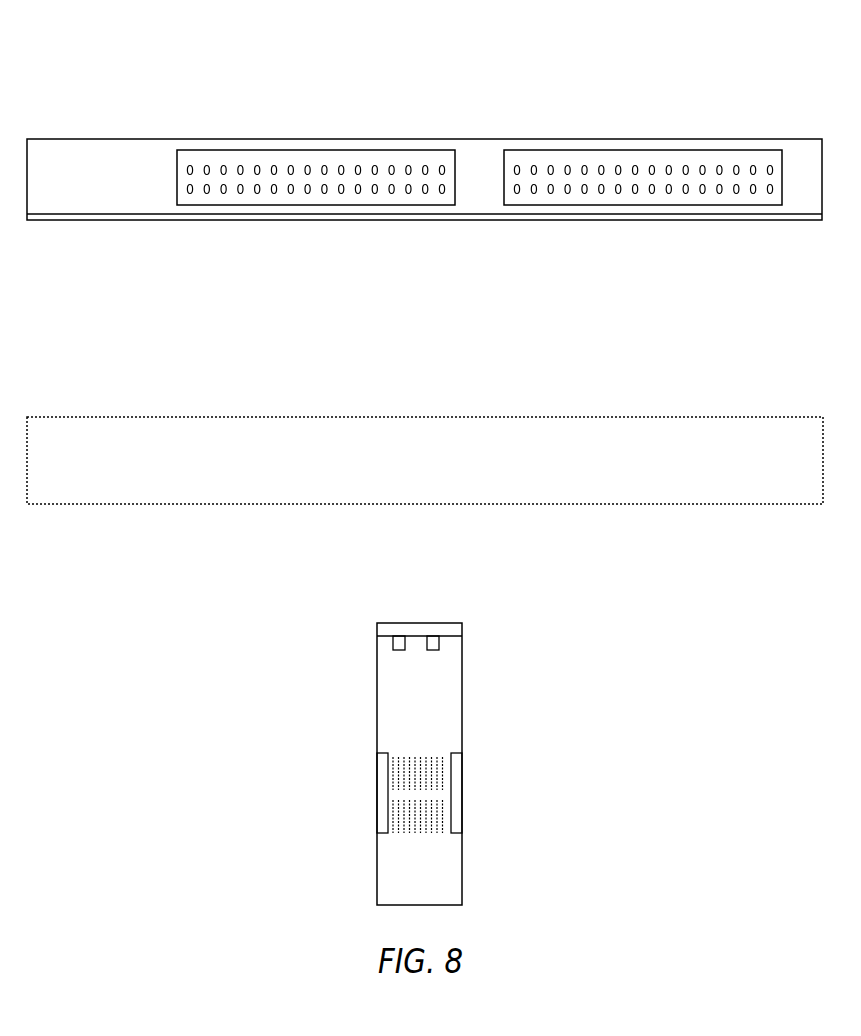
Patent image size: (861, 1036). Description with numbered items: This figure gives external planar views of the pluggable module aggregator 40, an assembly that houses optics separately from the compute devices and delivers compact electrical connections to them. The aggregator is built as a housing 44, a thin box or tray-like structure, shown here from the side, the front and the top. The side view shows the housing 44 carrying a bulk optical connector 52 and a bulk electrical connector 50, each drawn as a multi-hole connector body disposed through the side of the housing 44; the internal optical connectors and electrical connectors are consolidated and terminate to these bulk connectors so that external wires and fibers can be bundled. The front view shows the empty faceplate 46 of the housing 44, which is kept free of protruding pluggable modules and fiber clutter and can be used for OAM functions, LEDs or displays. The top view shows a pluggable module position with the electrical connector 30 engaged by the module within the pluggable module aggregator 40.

The electrical connector 30 is at (427, 748).
The pluggable module aggregator 40 is at (460, 105).
The housing 44 is at (117, 128).
The faceplate 46 is at (690, 405).
The bulk electrical connector 50 is at (585, 211).
The bulk optical connector 52 is at (265, 211).